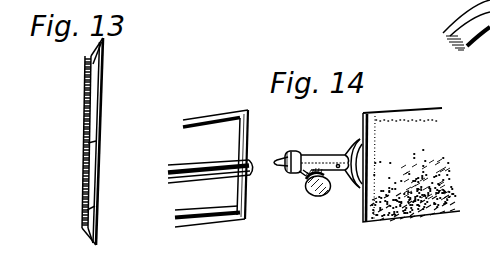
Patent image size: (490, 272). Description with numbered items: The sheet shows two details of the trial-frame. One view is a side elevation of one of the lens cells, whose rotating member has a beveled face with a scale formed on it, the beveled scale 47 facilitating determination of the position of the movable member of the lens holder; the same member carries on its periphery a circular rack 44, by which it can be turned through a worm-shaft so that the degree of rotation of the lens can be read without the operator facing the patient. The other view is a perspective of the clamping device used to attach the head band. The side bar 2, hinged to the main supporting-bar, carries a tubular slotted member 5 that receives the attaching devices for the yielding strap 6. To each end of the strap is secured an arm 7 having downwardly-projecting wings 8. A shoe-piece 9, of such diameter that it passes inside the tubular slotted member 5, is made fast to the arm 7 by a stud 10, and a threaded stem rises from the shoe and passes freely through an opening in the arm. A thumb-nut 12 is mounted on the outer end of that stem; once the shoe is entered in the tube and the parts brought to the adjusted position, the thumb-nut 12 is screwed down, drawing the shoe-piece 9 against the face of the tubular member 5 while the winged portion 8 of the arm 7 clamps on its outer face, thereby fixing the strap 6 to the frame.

In FIG. 14, the side bar 2 is at (211, 168).
In FIG. 14, the tubular slotted member 5 is at (211, 165).
In FIG. 14, the yielding strap 6 is at (411, 165).
In FIG. 14, the arm 7 is at (344, 176).
In FIG. 14, the wings 8 is at (303, 153).
In FIG. 14, the shoe-piece 9 is at (283, 161).
In FIG. 14, the stud 10 is at (351, 155).
In FIG. 14, the thumb-nut 12 is at (310, 194).
In FIG. 13, the circular rack 44 is at (83, 229).
In FIG. 13, the beveled scale 47 is at (90, 240).